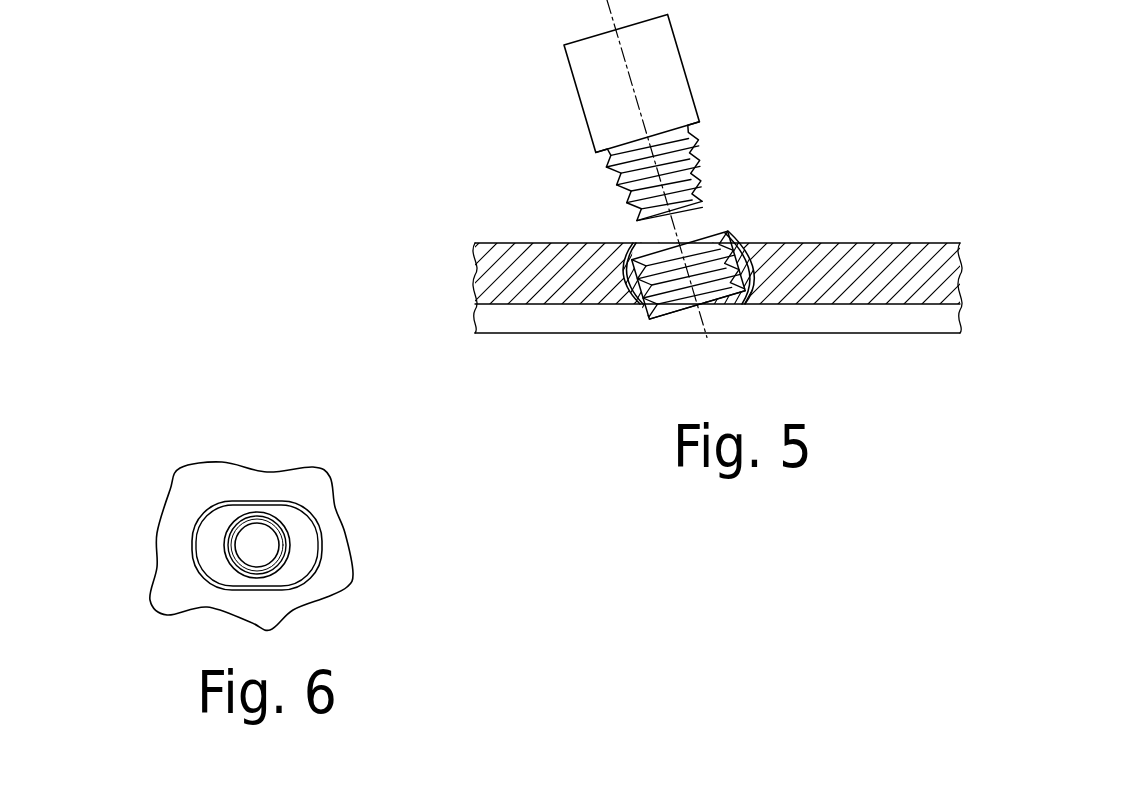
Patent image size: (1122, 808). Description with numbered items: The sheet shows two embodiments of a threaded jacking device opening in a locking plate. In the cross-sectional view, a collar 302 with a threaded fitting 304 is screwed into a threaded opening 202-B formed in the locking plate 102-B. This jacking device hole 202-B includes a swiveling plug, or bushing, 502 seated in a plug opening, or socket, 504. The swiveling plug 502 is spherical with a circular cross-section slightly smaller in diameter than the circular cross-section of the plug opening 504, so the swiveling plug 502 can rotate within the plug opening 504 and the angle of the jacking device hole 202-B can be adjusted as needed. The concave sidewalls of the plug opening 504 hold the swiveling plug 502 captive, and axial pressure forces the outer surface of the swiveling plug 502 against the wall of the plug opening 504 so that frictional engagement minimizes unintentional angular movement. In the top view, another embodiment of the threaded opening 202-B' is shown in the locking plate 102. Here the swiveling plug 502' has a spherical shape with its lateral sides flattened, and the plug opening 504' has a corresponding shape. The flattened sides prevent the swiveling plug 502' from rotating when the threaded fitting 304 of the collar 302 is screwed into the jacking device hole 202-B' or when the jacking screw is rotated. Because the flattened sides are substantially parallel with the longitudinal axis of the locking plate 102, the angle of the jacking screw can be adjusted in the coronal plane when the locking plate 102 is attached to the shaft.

In FIG. 6, the locking plate 102 is at (353, 583).
In FIG. 5, the locking plate 102-B is at (890, 243).
In FIG. 5, the threaded opening 202-B is at (716, 234).
In FIG. 6, the threaded opening 202-B' is at (280, 493).
In FIG. 5, the collar 302 is at (575, 89).
In FIG. 5, the threaded fitting 304 is at (620, 183).
In FIG. 5, the swiveling plug 502 is at (723, 263).
In FIG. 6, the swiveling plug 502' is at (332, 542).
In FIG. 5, the plug opening 504 is at (697, 346).
In FIG. 6, the plug opening 504' is at (198, 545).